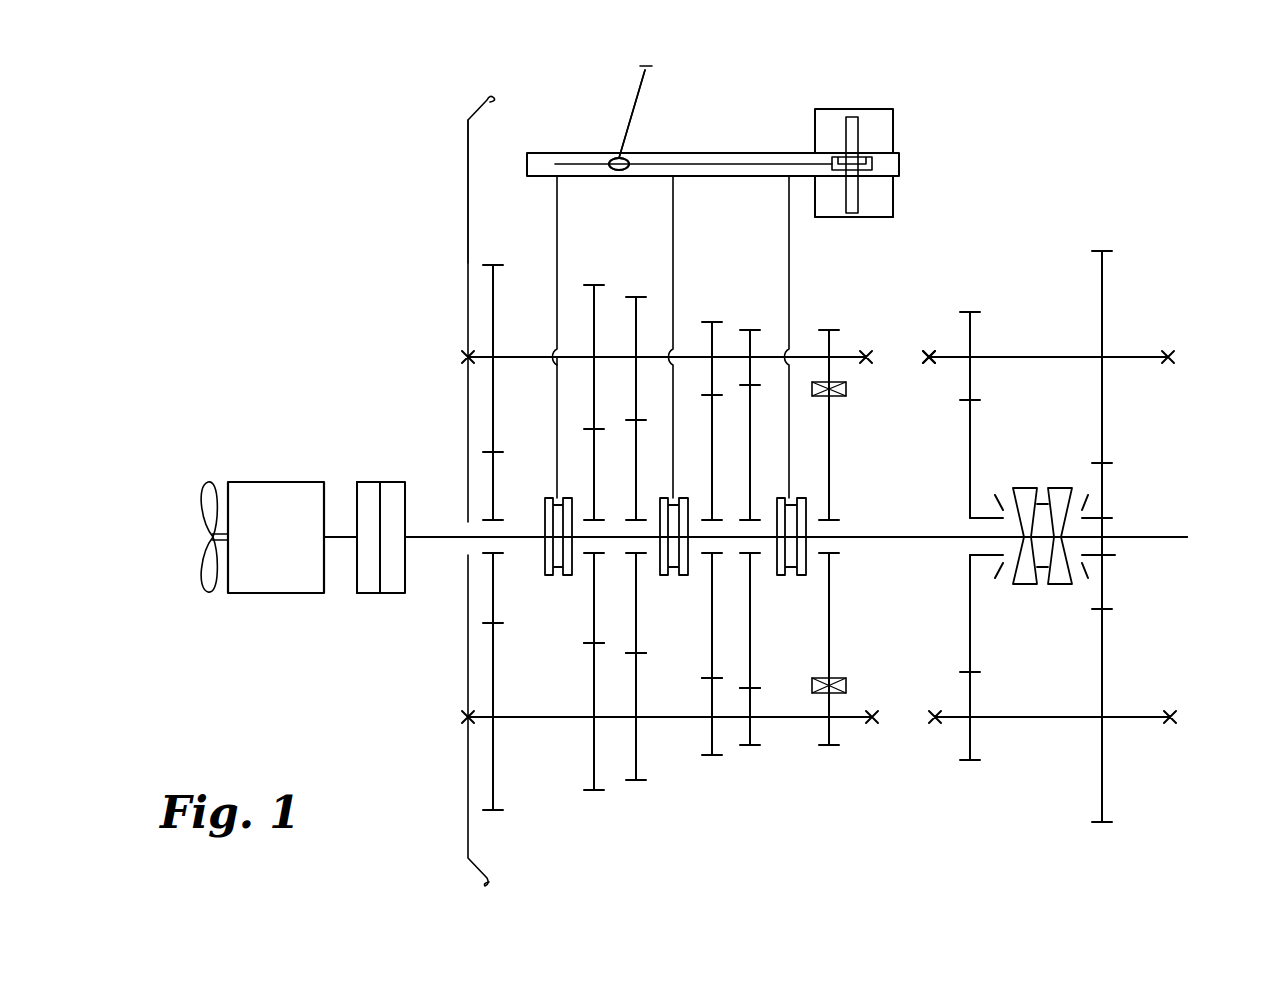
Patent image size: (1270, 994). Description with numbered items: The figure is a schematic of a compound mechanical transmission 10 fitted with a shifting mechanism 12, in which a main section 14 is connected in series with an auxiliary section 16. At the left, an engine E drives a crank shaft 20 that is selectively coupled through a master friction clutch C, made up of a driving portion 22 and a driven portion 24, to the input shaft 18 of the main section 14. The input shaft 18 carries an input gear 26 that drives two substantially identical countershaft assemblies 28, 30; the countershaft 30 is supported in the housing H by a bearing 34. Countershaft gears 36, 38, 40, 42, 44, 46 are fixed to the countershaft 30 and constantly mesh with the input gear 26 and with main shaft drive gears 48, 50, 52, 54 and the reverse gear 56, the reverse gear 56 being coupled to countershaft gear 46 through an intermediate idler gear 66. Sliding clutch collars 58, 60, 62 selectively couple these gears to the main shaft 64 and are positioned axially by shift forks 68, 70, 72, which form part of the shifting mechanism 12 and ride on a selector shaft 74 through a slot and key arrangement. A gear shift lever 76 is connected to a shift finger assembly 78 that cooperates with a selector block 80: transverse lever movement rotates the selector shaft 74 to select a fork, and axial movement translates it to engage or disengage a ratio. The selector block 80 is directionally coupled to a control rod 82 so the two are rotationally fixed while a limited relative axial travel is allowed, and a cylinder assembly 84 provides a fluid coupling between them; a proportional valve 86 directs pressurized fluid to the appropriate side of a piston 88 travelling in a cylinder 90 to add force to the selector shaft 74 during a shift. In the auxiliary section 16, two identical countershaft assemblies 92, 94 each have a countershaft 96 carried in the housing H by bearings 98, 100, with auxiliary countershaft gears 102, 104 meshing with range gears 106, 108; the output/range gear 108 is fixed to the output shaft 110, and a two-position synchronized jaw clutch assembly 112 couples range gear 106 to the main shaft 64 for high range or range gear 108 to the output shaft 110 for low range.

The transmission 10 is at (1115, 107).
The shifting mechanism 12 is at (750, 96).
The main section 14 is at (456, 214).
The auxiliary section 16 is at (1173, 225).
The input shaft 18 is at (427, 533).
The crank shaft 20 is at (338, 530).
The driving portion 22 is at (367, 593).
The driven portion 24 is at (394, 593).
The input gear 26 is at (505, 520).
The countershaft assembly 28 is at (523, 357).
The countershaft 30 is at (558, 719).
The bearing 34 is at (877, 725).
The countershaft gear 36 is at (497, 782).
The countershaft gear 38 is at (595, 800).
The countershaft gear 40 is at (638, 792).
The countershaft gear 42 is at (712, 765).
The countershaft gear 44 is at (752, 755).
The countershaft gear 46 is at (830, 755).
The main shaft drive gear 48 is at (590, 632).
The main shaft drive gear 50 is at (637, 640).
The main shaft drive gear 52 is at (712, 645).
The main shaft drive gear 54 is at (752, 640).
The reverse gear 56 is at (829, 650).
The sliding clutch collar 58 is at (553, 578).
The sliding clutch collar 60 is at (682, 491).
The sliding clutch collar 62 is at (782, 491).
The main shaft 64 is at (930, 540).
The intermediate idler gear 66 is at (848, 686).
The shift fork 68 is at (556, 445).
The shift fork 70 is at (673, 300).
The shift fork 72 is at (790, 300).
The selector shaft 74 is at (547, 152).
The gear shift lever 76 is at (648, 86).
The shift finger assembly 78 is at (630, 150).
The selector block 80 is at (628, 177).
The control rod 82 is at (708, 170).
The cylinder assembly 84 is at (900, 130).
The proportional valve 86 is at (875, 183).
The piston 88 is at (862, 128).
The cylinder 90 is at (877, 226).
The countershaft assembly 92 is at (1023, 357).
The countershaft assembly 94 is at (1060, 719).
The countershaft 96 is at (1080, 360).
The bearing 98 is at (927, 370).
The bearing 100 is at (1170, 357).
The auxiliary section countershaft gear 102 is at (970, 340).
The auxiliary section countershaft gear 104 is at (1104, 405).
The range gear 106 is at (968, 448).
The output/range gear 108 is at (1102, 480).
The output shaft 110 is at (1148, 538).
The two-position synchronized jaw clutch assembly 112 is at (1030, 587).
The engine E is at (262, 537).
The master friction clutch C is at (393, 482).
The housing H is at (468, 263).